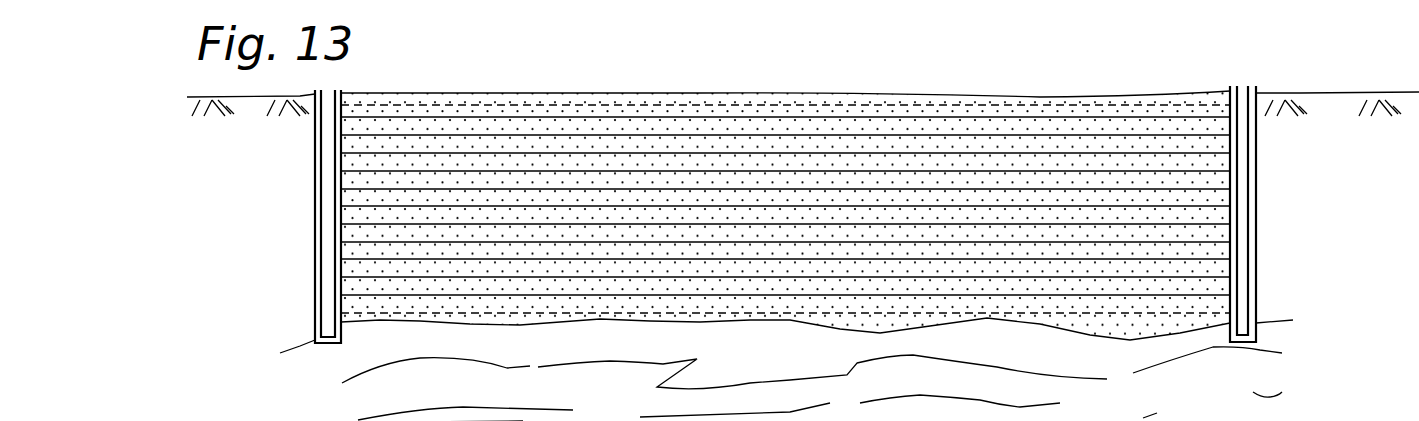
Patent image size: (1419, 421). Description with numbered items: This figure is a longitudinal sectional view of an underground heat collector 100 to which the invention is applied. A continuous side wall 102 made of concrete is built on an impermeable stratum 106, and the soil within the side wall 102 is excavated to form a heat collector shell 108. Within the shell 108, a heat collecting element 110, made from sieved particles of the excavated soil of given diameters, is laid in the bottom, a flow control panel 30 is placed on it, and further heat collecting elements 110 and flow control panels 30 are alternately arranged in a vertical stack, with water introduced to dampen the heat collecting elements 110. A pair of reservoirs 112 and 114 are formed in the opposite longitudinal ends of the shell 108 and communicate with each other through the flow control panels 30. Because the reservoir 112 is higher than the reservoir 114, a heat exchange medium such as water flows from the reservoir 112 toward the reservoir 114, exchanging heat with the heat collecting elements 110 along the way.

The underground heat collector 100 is at (660, 61).
The flow control panel 30 is at (923, 132).
The heat collecting element 110 is at (1027, 123).
The continuous side wall 102 is at (1253, 175).
The heat collector shell 108 is at (323, 241).
The reservoir 112 is at (327, 179).
The reservoir 114 is at (1243, 222).
The impermeable stratum 106 is at (517, 370).